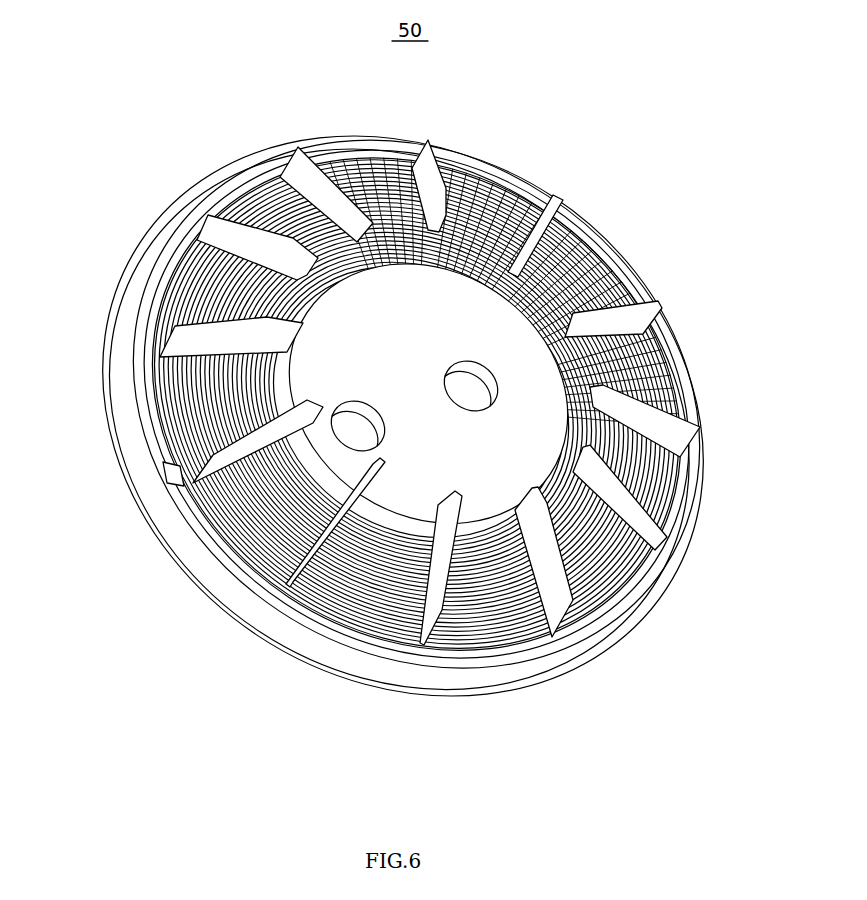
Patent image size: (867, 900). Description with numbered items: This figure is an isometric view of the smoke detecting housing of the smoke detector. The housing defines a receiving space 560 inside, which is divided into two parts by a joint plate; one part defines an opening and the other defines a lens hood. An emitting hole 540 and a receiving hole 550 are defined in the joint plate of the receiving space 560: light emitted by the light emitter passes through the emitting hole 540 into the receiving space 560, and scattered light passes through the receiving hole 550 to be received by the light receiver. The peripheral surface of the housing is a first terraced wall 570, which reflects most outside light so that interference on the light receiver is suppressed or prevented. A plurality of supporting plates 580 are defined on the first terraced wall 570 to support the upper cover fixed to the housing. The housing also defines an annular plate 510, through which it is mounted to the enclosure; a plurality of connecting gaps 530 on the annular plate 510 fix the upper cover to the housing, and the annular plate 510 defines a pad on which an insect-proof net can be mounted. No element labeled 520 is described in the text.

The annular plate 510 is at (102, 345).
The inner ring 520 is at (148, 417).
The connecting gap 530 is at (185, 490).
The emitting hole 540 is at (265, 555).
The receiving hole 550 is at (683, 497).
The receiving space 560 is at (418, 320).
The first terraced wall 570 is at (510, 200).
The supporting plate 580 is at (303, 173).